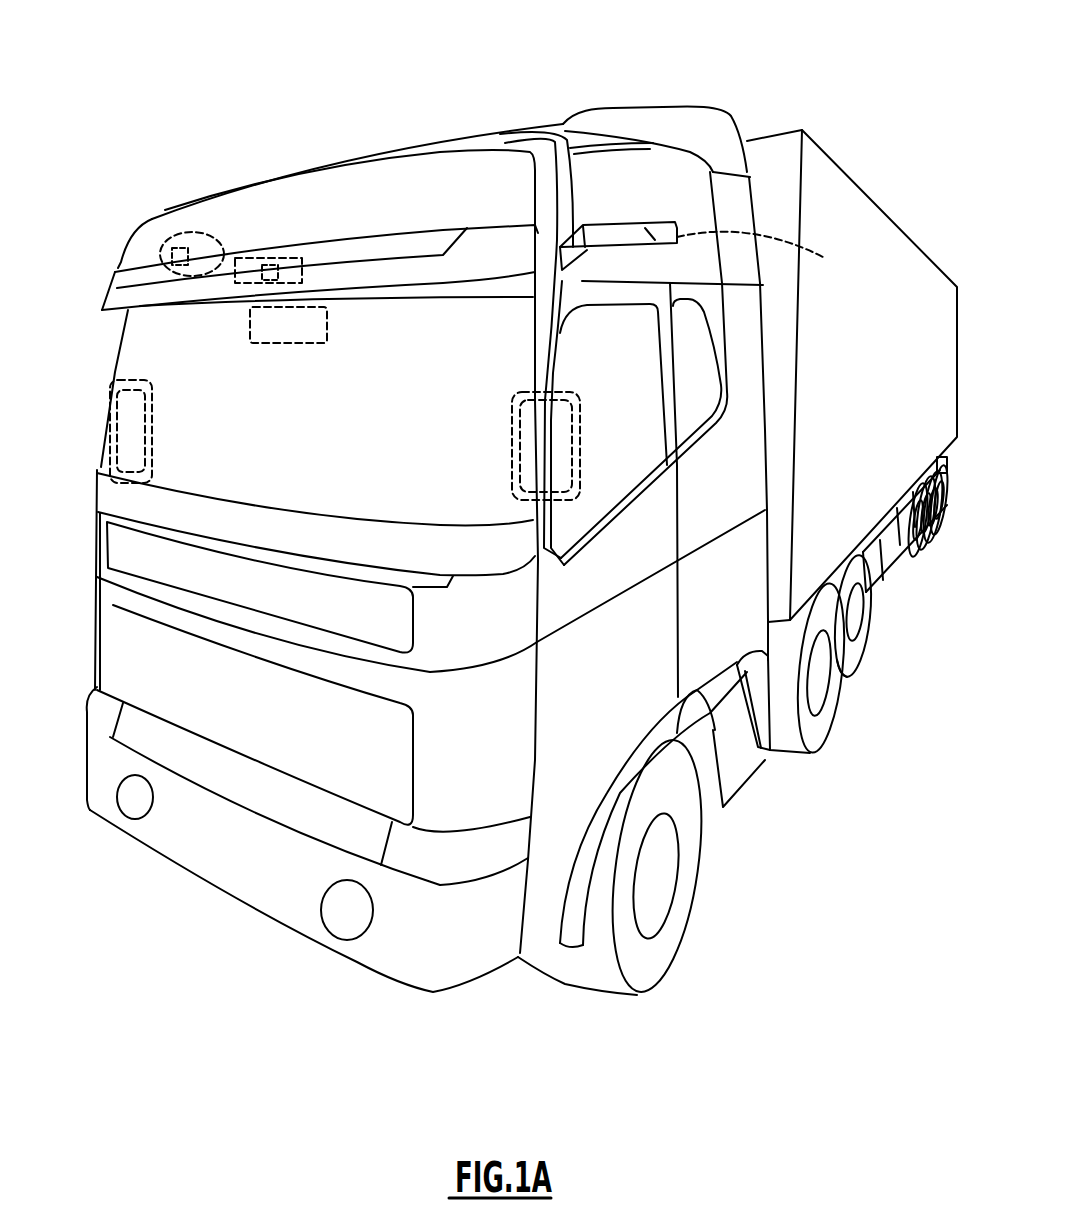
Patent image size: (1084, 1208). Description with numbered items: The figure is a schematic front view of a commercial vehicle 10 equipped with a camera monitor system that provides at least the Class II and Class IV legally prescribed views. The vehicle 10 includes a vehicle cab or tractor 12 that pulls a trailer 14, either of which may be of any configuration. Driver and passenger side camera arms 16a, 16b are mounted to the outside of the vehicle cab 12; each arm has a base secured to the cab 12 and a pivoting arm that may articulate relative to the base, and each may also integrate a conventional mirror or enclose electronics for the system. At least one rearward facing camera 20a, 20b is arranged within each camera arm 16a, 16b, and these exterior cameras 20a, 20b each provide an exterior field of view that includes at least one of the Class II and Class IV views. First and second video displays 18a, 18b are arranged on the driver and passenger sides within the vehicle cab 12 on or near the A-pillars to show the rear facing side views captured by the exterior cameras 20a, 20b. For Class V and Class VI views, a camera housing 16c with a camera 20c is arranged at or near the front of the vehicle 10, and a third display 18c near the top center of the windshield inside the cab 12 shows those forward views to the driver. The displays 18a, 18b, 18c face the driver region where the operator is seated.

The commercial vehicle 10 is at (500, 503).
The vehicle cab 12 is at (458, 551).
The trailer 14 is at (918, 290).
The driver side camera arm 16a is at (612, 222).
The passenger side camera arm 16b is at (173, 246).
The camera housing 16c is at (266, 263).
The first video display 18a is at (520, 434).
The second video display 18b is at (137, 415).
The third display 18c is at (327, 313).
The rearward facing camera 20a is at (772, 252).
The rearward facing camera 20b is at (162, 240).
The camera 20c is at (259, 284).